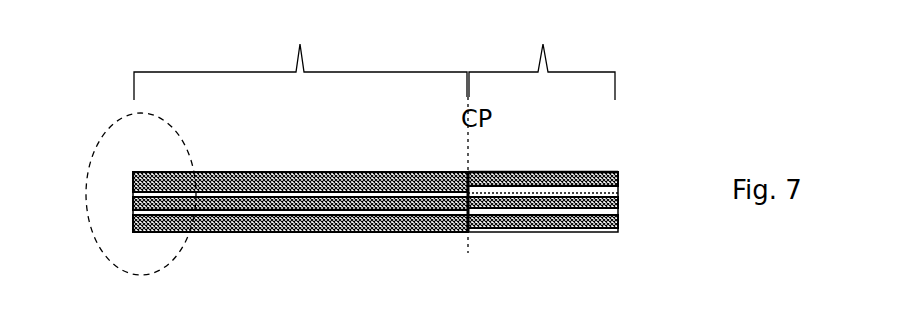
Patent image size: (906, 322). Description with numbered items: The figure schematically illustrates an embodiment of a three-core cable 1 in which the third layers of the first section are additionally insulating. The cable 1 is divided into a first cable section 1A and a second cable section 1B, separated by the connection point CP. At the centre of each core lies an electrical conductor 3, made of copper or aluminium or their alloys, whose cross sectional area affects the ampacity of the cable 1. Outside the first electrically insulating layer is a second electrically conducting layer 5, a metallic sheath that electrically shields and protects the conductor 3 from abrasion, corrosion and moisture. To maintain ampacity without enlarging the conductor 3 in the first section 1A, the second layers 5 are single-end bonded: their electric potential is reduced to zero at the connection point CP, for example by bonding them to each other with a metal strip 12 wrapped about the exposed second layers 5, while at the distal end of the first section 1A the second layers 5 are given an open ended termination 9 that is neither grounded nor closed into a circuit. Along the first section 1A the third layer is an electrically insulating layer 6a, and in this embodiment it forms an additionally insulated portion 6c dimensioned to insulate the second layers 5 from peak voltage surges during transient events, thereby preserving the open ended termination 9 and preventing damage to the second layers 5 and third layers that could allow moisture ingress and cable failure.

The cable 1 is at (647, 80).
The first cable section 1A is at (300, 57).
The second cable section 1B is at (542, 57).
The electrical conductor 3 is at (522, 171).
The second electrically conducting layer 5 is at (618, 174).
The electrically insulating third layer 6a is at (620, 204).
The additionally insulated portion 6c is at (332, 232).
The open ended termination 9 is at (112, 130).
The metal strip 12 is at (490, 230).